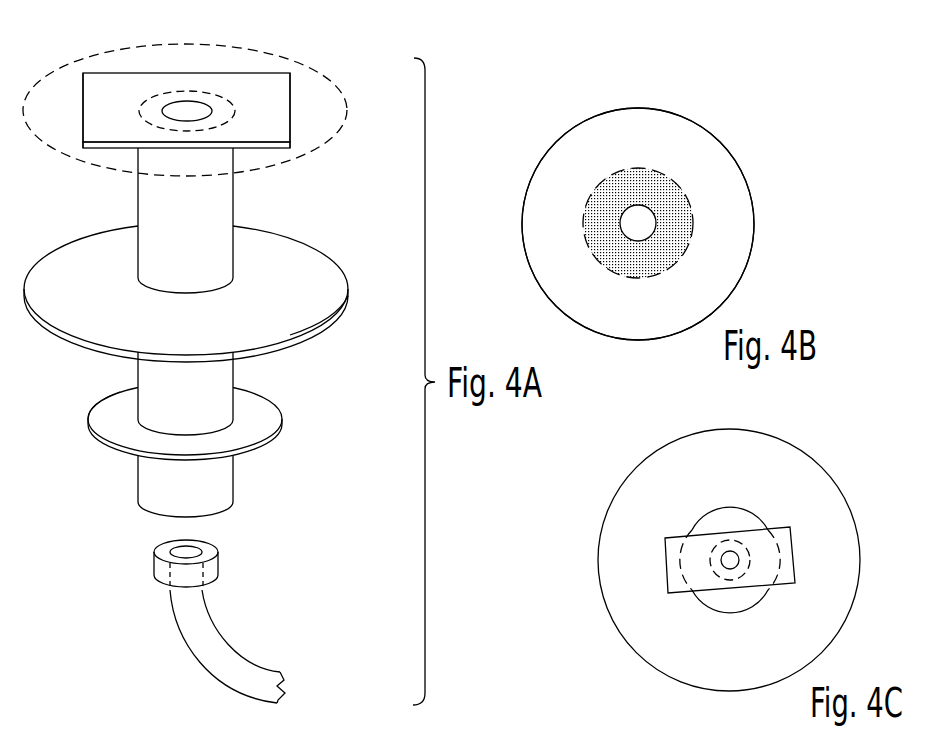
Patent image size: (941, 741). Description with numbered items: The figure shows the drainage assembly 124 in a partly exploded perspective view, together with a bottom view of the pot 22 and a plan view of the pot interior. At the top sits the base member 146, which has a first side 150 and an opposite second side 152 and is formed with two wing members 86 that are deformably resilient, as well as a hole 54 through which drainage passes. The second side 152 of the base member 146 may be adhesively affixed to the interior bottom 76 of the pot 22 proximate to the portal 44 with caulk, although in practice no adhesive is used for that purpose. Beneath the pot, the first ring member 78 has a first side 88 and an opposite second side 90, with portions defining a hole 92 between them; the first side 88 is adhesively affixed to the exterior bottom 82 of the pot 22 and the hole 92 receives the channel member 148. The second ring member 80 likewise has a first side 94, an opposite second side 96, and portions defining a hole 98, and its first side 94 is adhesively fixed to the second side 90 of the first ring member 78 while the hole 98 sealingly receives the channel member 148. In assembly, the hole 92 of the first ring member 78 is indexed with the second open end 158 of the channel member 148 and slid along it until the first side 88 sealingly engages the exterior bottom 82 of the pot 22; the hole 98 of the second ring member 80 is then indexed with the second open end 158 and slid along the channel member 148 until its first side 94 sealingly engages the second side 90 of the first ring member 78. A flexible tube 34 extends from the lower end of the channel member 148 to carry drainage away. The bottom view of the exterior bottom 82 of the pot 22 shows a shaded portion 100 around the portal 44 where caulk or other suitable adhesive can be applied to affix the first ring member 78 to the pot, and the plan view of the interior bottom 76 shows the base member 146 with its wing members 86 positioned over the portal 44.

In FIG. 4A, the base member 146 is at (108, 80).
In FIG. 4C, the base member 146 is at (678, 540).
In FIG. 4A, the first side 150 is at (105, 118).
In FIG. 4A, the hole 54 is at (212, 110).
In FIG. 4A, the wing members 86 is at (282, 117).
In FIG. 4A, the second side 152 is at (108, 152).
In FIG. 4A, the first side 88 is at (283, 253).
In FIG. 4A, the hole 92 is at (138, 278).
In FIG. 4A, the first ring member 78 is at (316, 262).
In FIG. 4A, the second side 90 is at (303, 345).
In FIG. 4A, the drainage assembly 124 is at (352, 315).
In FIG. 4A, the hole 98 is at (140, 418).
In FIG. 4A, the second ring member 80 is at (272, 420).
In FIG. 4A, the first side 94 is at (113, 414).
In FIG. 4A, the second side 96 is at (127, 458).
In FIG. 4A, the second open end 158 is at (233, 497).
In FIG. 4A, the channel member 148 is at (148, 503).
In FIG. 4A, the tube 34 is at (222, 648).
In FIG. 4B, the pot 22 is at (554, 140).
In FIG. 4B, the exterior bottom 82 is at (593, 152).
In FIG. 4B, the portal 44 is at (656, 218).
In FIG. 4C, the portal 44 is at (730, 604).
In FIG. 4B, the shaded portion 100 is at (628, 270).
In FIG. 4C, the interior bottom 76 is at (720, 482).